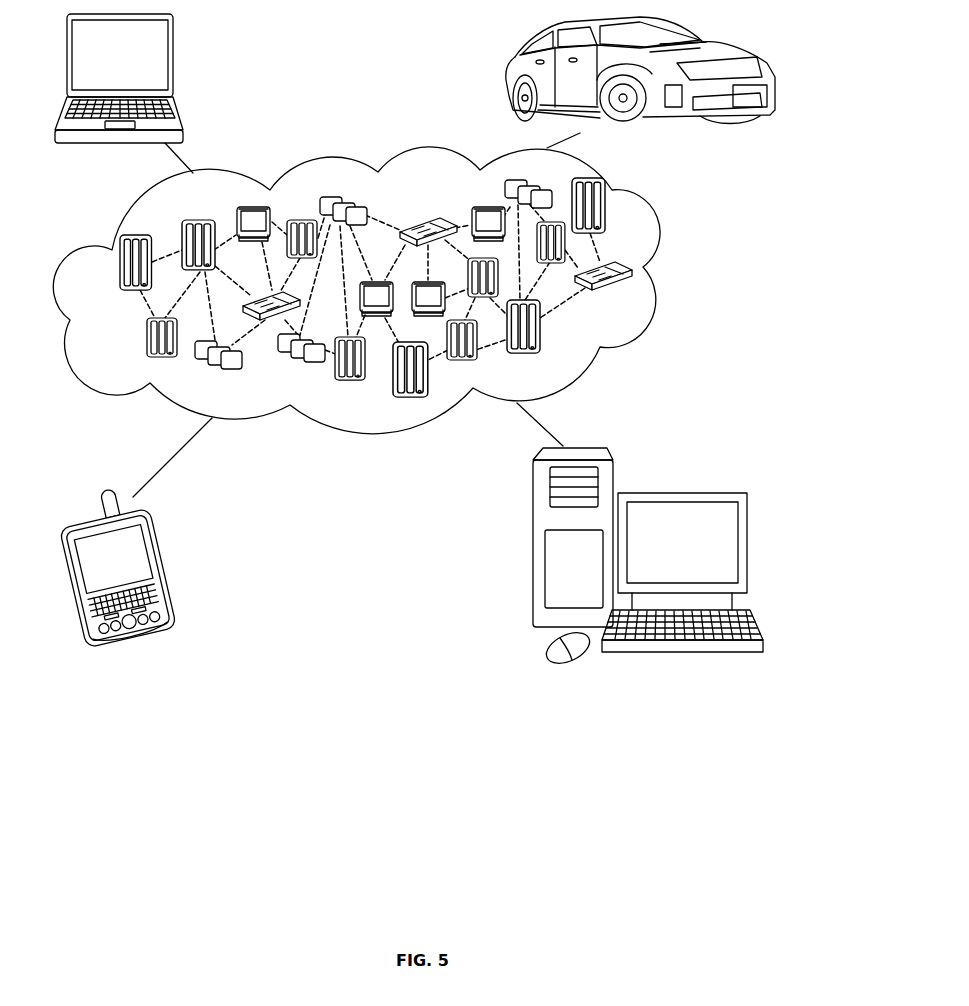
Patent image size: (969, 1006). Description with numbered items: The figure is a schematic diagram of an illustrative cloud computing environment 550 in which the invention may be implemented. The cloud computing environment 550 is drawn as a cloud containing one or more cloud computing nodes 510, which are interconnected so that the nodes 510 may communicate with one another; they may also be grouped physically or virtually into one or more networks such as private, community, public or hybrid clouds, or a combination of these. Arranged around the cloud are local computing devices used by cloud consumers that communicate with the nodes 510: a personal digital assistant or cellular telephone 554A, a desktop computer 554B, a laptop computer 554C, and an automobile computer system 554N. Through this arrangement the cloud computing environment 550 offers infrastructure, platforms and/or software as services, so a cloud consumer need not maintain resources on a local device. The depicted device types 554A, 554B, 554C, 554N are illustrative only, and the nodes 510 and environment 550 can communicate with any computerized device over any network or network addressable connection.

The cloud computing nodes 510 is at (424, 287).
The cloud computing environment 550 is at (680, 273).
The personal digital assistant (PDA) or cellular telephone 554A is at (165, 564).
The desktop computer 554B is at (677, 493).
The laptop computer 554C is at (173, 62).
The automobile computer system 554N is at (510, 73).